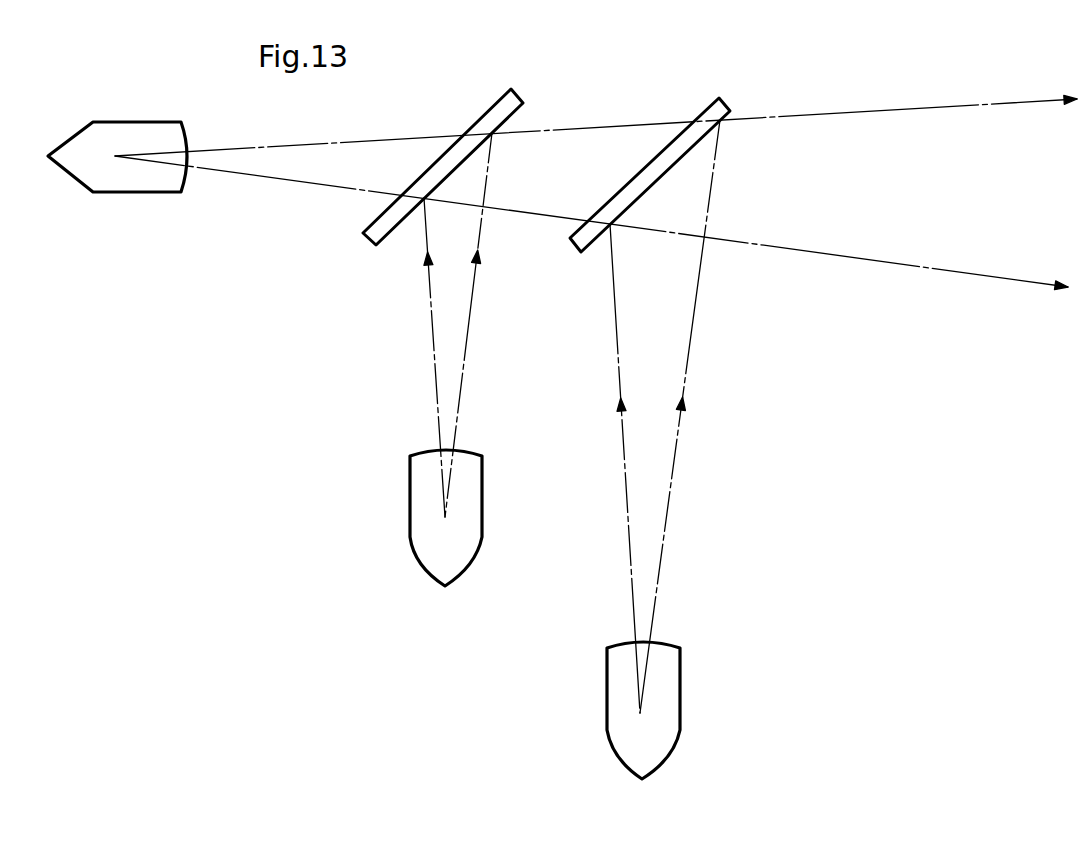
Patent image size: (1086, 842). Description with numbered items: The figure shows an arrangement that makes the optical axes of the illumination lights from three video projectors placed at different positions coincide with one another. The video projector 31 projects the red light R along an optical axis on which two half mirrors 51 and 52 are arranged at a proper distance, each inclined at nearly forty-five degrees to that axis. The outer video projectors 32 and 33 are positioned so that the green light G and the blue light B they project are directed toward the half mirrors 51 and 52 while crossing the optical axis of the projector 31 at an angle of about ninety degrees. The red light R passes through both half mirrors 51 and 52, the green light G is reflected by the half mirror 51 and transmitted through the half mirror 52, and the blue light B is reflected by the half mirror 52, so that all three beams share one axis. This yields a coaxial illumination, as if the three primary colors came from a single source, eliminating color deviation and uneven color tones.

The video projector 31 is at (118, 193).
The video projector 32 is at (408, 506).
The video projector 33 is at (606, 679).
The half mirror 51 is at (485, 112).
The half mirror 52 is at (703, 112).
The red light R is at (318, 143).
The green light G is at (476, 276).
The blue light B is at (678, 430).